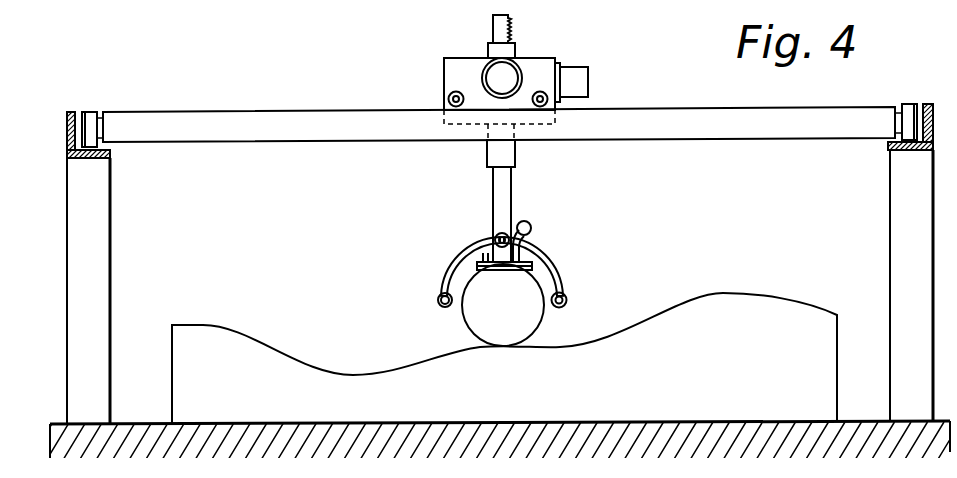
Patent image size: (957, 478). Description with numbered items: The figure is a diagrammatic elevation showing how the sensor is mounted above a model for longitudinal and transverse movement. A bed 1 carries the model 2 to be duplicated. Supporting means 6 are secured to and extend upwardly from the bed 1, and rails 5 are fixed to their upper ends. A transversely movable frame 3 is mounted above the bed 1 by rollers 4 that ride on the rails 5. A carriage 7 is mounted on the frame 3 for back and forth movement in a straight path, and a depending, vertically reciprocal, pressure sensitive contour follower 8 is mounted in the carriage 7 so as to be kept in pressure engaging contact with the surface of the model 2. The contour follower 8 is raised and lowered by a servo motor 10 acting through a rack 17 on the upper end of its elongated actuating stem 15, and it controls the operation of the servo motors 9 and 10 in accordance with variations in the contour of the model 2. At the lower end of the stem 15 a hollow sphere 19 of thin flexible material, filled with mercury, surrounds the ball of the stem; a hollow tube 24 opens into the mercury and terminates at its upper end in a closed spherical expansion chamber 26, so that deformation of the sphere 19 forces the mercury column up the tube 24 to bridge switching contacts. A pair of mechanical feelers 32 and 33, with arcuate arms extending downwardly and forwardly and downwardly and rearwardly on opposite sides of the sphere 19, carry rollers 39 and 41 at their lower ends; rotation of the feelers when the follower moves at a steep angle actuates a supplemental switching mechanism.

The bed 1 is at (719, 419).
The model 2 is at (722, 299).
The transversely movable frame 3 is at (348, 118).
The rollers 4 is at (91, 112).
The rails 5 is at (67, 137).
The supporting means 6 is at (75, 298).
The carriage 7 is at (533, 68).
The contour follower 8 is at (490, 210).
The servo motor 9 is at (492, 72).
The servo motor 10 is at (573, 70).
The actuating stem 15 is at (511, 188).
The rack 17 is at (509, 28).
The hollow sphere 19 is at (520, 328).
The hollow tube 24 is at (518, 247).
The expansion chamber 26 is at (529, 227).
The feeler 32 is at (563, 283).
The feeler 33 is at (455, 259).
The roller 39 is at (565, 306).
The roller 41 is at (437, 305).